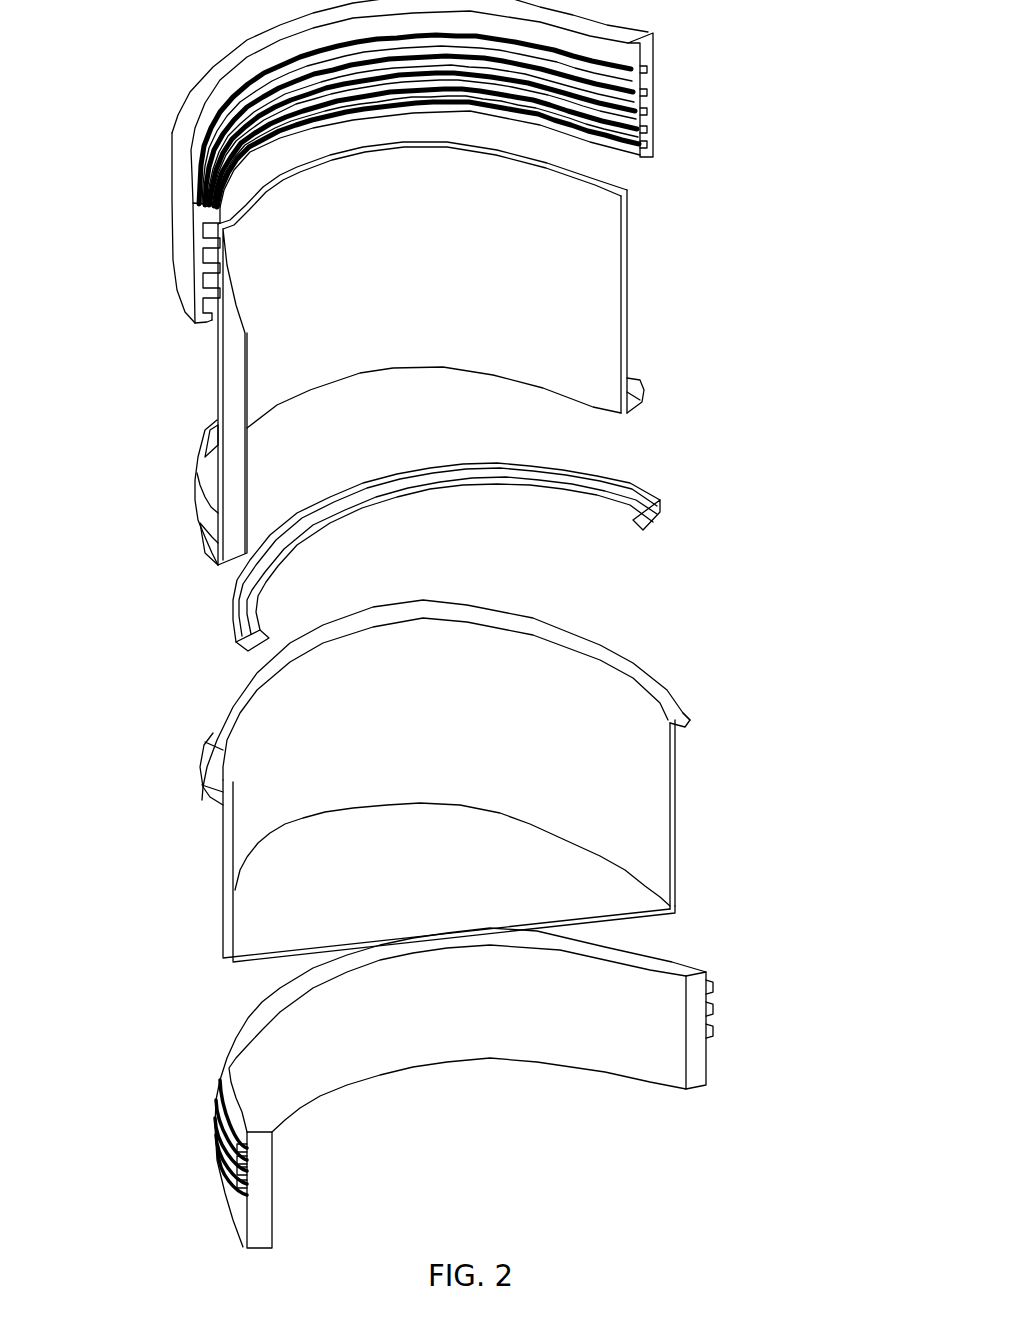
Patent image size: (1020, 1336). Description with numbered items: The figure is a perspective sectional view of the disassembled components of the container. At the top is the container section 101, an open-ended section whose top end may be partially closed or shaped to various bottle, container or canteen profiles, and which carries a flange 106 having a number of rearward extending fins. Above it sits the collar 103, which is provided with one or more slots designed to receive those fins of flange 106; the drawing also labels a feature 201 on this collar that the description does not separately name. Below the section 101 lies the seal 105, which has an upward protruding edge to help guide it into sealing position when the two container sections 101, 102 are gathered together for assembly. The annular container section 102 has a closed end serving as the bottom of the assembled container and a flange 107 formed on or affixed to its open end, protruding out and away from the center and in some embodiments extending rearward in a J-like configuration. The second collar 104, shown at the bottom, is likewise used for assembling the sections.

The container section 101 is at (630, 300).
The container section 102 is at (675, 803).
The collar 103 is at (172, 231).
The collar 104 is at (470, 930).
The seal 105 is at (453, 500).
The flange 106 is at (198, 514).
The flange 107 is at (667, 678).
The stepped teeth 201 is at (220, 223).